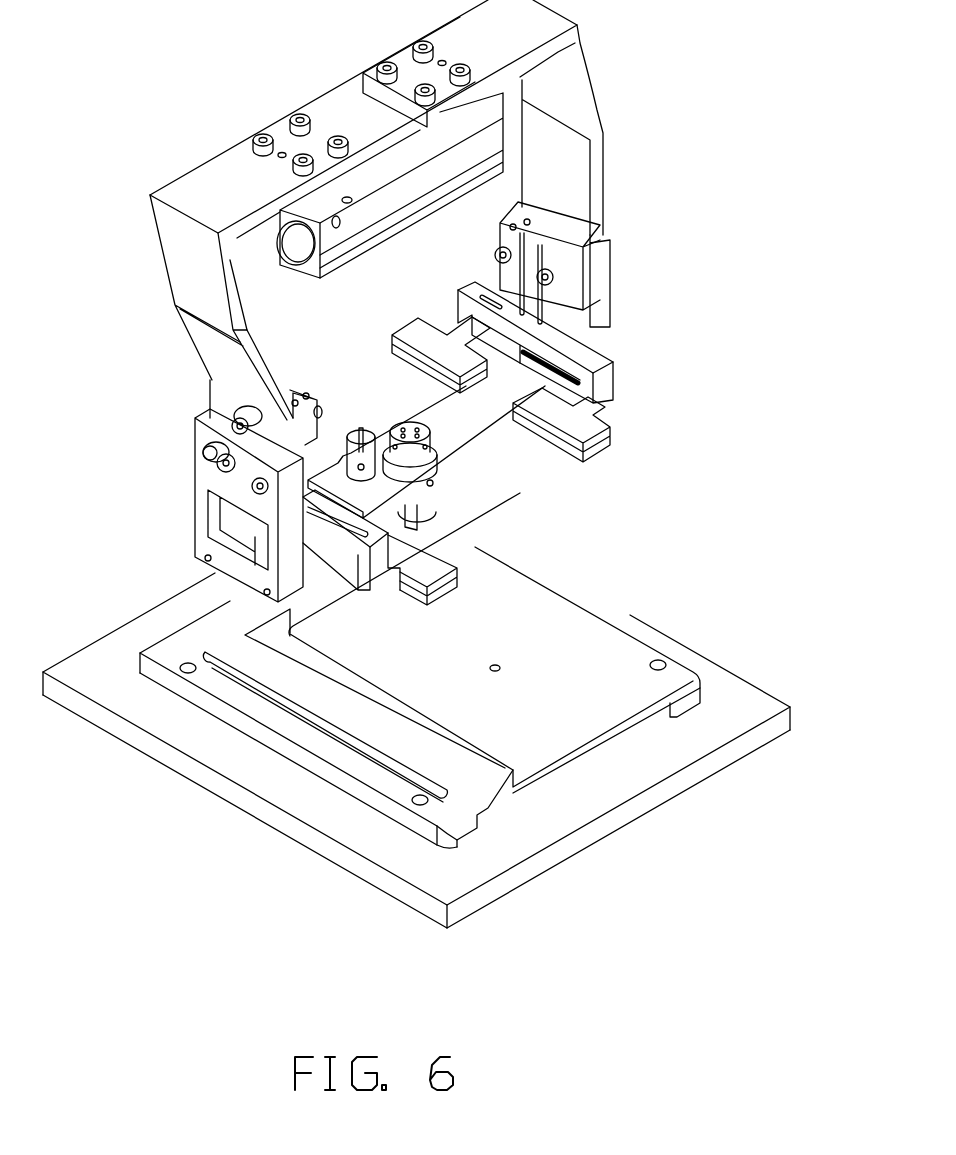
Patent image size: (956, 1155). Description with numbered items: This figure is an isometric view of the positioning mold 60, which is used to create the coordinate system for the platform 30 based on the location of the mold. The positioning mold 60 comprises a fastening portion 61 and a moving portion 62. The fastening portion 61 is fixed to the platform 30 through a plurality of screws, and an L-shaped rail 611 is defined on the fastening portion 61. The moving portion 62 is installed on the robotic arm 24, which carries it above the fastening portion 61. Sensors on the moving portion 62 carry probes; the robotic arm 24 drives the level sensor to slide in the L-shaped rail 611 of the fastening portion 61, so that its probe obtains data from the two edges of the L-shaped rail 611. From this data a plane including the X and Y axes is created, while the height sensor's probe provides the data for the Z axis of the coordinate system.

The robotic arm 24 is at (597, 167).
The platform 30 is at (733, 687).
The positioning mold 60 is at (378, 582).
The fastening portion 61 is at (378, 670).
The L-shaped rail 611 is at (212, 655).
The moving portion 62 is at (457, 442).